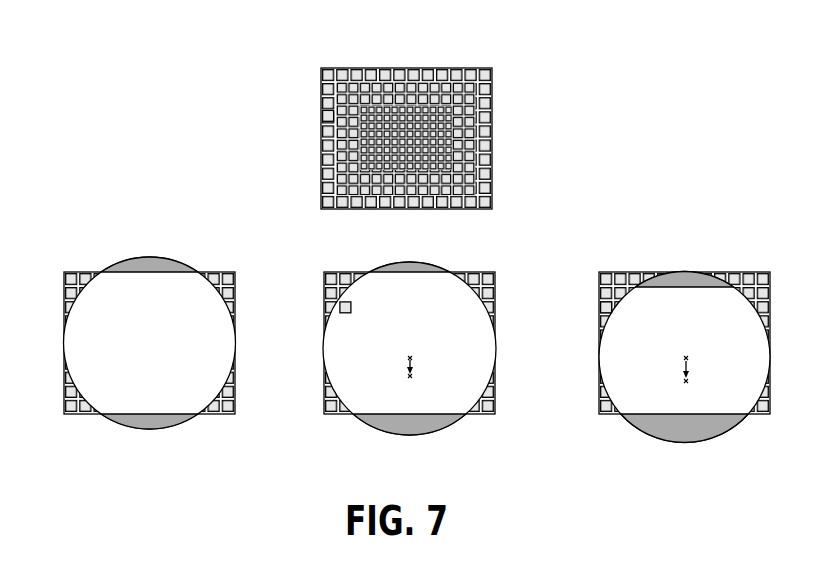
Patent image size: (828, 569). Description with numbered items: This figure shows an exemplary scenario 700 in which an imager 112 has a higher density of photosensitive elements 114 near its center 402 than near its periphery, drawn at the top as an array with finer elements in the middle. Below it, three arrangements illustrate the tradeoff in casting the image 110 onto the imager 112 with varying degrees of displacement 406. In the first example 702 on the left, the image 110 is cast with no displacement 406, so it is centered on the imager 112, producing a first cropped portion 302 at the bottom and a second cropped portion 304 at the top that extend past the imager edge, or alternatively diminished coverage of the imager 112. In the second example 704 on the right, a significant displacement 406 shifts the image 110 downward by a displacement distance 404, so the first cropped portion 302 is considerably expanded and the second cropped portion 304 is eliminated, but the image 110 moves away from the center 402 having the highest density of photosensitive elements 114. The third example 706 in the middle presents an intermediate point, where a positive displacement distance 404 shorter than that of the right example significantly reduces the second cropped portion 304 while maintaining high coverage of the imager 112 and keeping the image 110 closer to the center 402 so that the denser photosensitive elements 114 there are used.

The exemplary scenario 700 is at (107, 28).
The imager 112 is at (322, 80).
The photosensitive elements 114 is at (323, 117).
The image 110 is at (80, 338).
The first example 702 is at (95, 272).
The third example 706 is at (355, 272).
The second example 704 is at (628, 272).
The second cropped portion 304 is at (163, 268).
The first cropped portion 302 is at (130, 413).
The center 402 is at (408, 357).
The displacement distance 404 is at (414, 360).
The displacement 406 is at (408, 373).